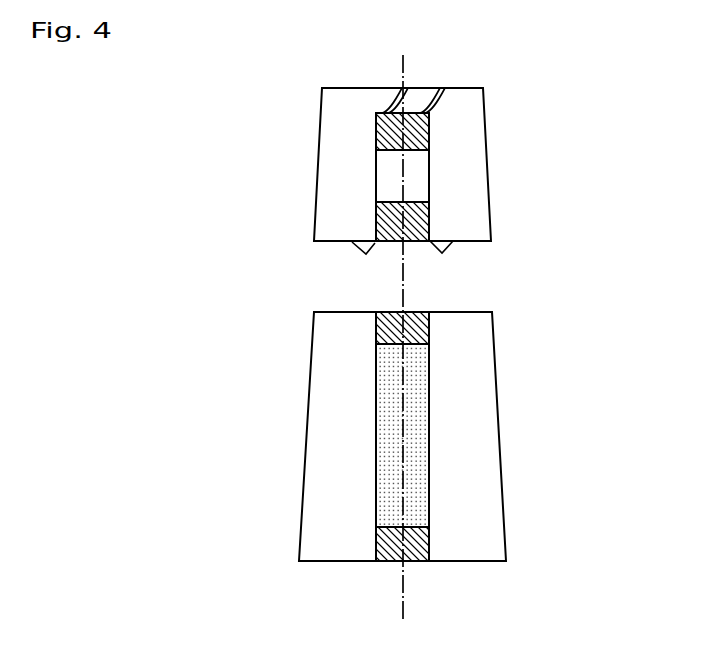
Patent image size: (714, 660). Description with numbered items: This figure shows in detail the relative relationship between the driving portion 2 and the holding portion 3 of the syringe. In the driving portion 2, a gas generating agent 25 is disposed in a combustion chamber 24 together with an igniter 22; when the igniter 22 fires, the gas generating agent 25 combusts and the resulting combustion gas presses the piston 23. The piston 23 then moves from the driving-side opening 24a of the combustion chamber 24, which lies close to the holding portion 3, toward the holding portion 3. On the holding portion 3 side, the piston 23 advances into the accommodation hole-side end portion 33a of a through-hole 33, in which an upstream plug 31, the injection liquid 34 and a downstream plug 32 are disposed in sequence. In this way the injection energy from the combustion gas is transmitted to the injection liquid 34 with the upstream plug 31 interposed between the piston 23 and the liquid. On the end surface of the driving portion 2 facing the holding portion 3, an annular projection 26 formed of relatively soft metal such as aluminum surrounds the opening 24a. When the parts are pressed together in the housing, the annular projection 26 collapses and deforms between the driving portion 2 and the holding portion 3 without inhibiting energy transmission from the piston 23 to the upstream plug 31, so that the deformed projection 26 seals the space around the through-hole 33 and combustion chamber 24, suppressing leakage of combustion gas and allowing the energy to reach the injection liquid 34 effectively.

The driving portion 2 is at (478, 142).
The igniter 22 is at (377, 134).
The piston 23 is at (430, 223).
The combustion chamber 24 is at (378, 173).
The opening 24a is at (413, 243).
The gas generating agent 25 is at (422, 173).
The annular projection 26 is at (366, 254).
The holding portion 3 is at (487, 433).
The upstream plug 31 is at (430, 333).
The downstream plug 32 is at (430, 540).
The through-hole 33 is at (377, 480).
The end portion 33a is at (395, 311).
The injection liquid 34 is at (390, 423).